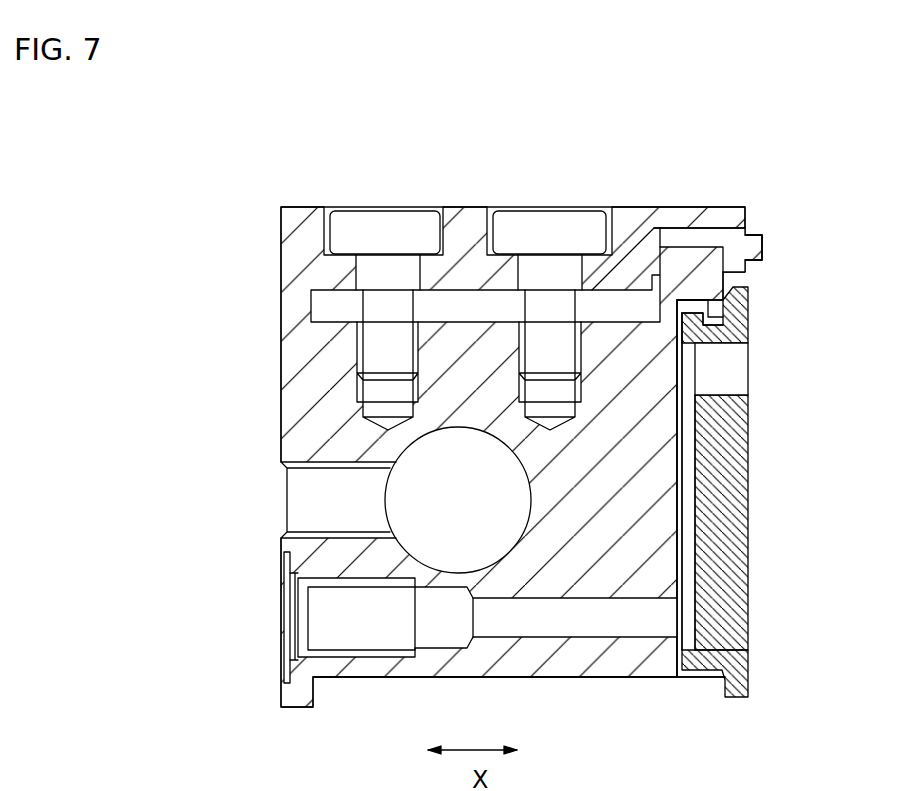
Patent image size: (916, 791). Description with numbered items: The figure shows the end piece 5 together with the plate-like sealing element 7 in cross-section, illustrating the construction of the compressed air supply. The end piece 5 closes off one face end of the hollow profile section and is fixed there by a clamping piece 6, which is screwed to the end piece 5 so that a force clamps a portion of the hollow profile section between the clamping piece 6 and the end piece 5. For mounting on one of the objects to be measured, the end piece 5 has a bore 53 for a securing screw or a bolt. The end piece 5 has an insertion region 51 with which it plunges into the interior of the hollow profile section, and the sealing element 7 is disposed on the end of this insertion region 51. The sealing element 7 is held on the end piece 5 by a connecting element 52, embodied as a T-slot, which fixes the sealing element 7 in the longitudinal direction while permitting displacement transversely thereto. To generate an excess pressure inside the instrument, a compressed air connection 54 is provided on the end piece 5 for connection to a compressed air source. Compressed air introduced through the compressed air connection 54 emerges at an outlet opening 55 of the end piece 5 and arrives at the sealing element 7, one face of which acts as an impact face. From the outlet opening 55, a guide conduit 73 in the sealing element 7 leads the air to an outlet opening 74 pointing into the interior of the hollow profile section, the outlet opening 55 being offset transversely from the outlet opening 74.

The end piece 5 is at (300, 293).
The clamping piece 6 is at (728, 217).
The sealing element 7 is at (735, 545).
The insertion region 51 is at (610, 662).
The connecting element 52 is at (700, 305).
The bore 53 is at (430, 497).
The compressed air connection 54 is at (307, 628).
The outlet opening 55 is at (695, 610).
The guide conduit 73 is at (695, 465).
The outlet opening 74 is at (735, 375).